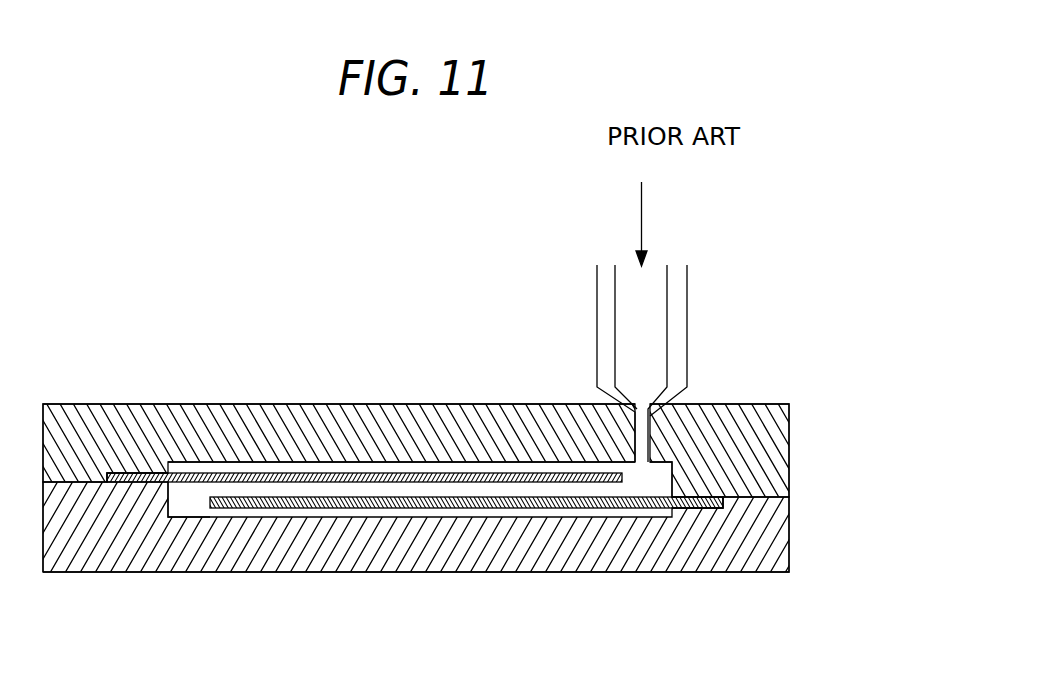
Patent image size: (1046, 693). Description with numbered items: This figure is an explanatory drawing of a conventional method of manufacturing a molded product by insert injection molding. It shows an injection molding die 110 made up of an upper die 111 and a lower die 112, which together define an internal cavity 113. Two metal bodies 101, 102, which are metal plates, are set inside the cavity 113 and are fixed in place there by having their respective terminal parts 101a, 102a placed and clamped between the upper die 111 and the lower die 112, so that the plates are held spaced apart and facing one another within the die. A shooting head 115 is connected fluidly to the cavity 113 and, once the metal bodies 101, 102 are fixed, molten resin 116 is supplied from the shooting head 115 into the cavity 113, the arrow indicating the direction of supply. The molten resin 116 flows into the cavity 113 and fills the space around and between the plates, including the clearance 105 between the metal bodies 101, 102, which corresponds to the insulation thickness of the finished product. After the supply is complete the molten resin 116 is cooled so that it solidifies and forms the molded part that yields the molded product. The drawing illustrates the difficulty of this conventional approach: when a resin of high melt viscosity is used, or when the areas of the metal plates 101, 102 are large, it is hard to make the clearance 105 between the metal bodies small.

The injection molding die 110 is at (775, 391).
The upper die 111 is at (262, 416).
The lower die 112 is at (297, 540).
The cavity 113 is at (196, 517).
The metal body 101 is at (505, 473).
The terminal part 101a is at (135, 472).
The metal body 102 is at (510, 508).
The terminal part 102a is at (700, 508).
The clearance 105 is at (358, 492).
The shooting head 115 is at (688, 329).
The molten resin 116 is at (643, 213).